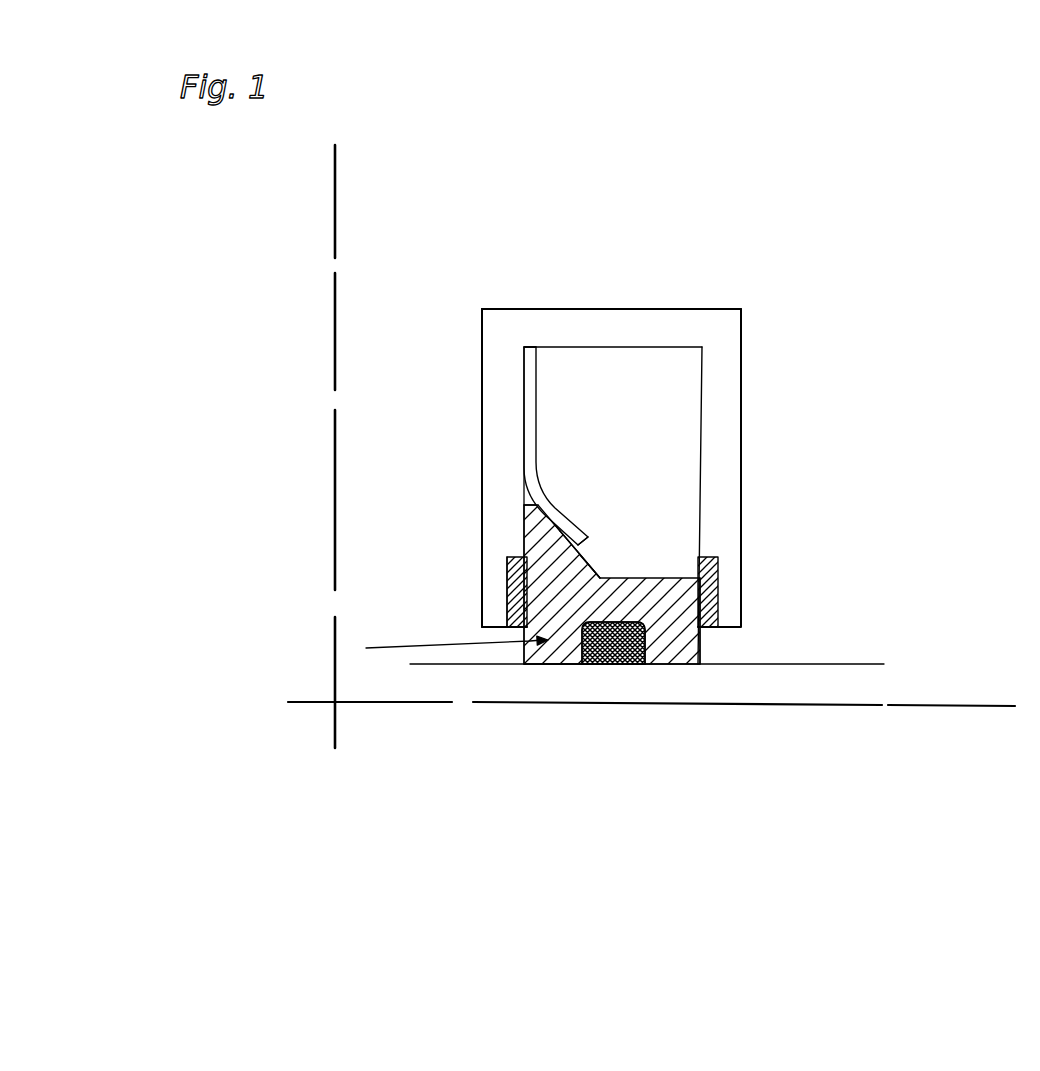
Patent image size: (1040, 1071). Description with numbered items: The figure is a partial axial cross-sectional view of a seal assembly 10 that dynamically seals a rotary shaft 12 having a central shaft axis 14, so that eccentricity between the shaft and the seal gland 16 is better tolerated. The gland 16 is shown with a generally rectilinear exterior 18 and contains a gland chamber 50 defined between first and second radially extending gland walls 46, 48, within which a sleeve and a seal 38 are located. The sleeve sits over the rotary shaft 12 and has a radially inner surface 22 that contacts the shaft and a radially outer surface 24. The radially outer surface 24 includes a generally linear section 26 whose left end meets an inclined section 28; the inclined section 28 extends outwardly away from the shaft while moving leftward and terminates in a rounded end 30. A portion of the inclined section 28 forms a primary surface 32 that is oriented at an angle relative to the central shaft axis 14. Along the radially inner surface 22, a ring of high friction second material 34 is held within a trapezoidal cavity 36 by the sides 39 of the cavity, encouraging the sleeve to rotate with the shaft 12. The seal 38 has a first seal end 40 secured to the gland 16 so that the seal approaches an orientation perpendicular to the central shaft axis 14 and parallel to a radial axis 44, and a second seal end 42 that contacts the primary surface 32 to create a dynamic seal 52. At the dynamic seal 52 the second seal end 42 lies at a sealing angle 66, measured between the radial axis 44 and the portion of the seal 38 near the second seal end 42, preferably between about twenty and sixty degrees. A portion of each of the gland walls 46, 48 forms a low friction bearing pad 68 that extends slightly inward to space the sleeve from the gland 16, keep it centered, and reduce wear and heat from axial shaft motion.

The seal assembly 10 is at (758, 323).
The rotary shaft 12 is at (884, 663).
The central shaft axis 14 is at (948, 703).
The seal gland 16 is at (727, 360).
The rectilinear exterior 18 is at (712, 310).
The radially inner surface 22 is at (560, 660).
The radially outer surface 24 is at (633, 522).
The generally linear section 26 is at (640, 575).
The inclined section 28 is at (582, 578).
The rounded end 30 is at (536, 500).
The primary surface 32 is at (545, 540).
The second material 34 is at (632, 661).
The cavity 36 is at (645, 635).
The seal 38 is at (540, 419).
The sides 39 is at (585, 650).
The first seal end 40 is at (537, 352).
The second seal end 42 is at (770, 367).
The radial axis 44 is at (335, 348).
The first radially extending gland wall 46 is at (520, 368).
The second radially extending gland wall 48 is at (700, 420).
The gland chamber 50 is at (661, 393).
The dynamic seal 52 is at (540, 550).
The sealing angle 66 is at (598, 587).
The bearing pad 68 is at (547, 605).